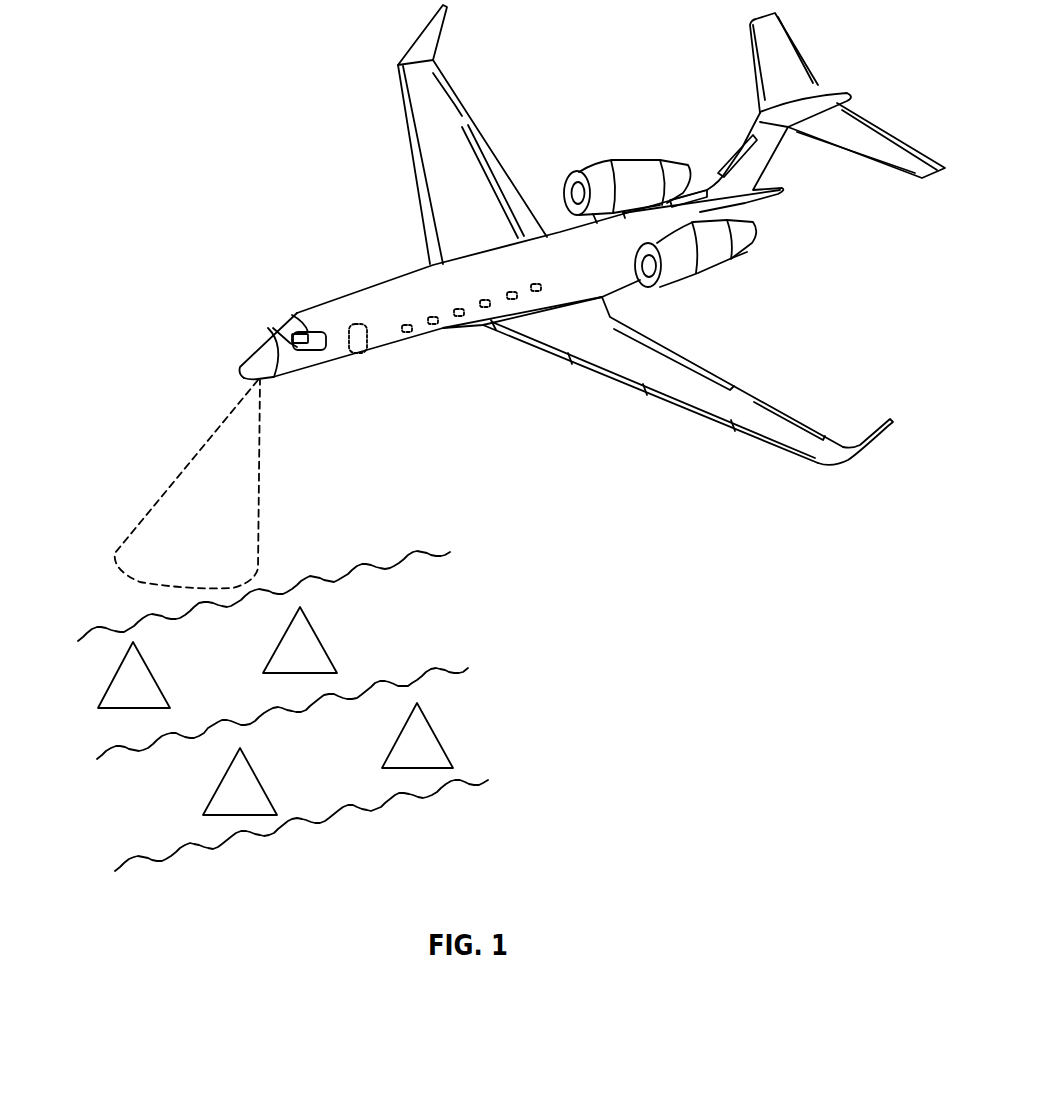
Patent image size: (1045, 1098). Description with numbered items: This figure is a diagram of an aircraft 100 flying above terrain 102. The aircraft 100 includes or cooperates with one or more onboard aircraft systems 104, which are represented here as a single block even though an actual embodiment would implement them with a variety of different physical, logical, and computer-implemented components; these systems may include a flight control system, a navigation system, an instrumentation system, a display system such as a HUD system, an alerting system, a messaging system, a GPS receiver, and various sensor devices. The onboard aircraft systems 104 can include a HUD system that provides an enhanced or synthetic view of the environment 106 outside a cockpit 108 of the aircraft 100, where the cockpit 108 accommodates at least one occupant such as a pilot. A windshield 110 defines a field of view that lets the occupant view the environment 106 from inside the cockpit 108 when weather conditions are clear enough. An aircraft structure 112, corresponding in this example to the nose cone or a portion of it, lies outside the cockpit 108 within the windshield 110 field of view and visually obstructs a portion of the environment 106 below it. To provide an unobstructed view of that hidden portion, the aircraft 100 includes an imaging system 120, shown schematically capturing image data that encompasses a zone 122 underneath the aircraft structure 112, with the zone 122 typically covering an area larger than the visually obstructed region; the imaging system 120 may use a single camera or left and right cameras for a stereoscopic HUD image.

The aircraft 100 is at (552, 235).
The terrain 102 is at (532, 640).
The onboard aircraft systems 104 is at (298, 333).
The environment 106 is at (115, 480).
The cockpit 108 is at (283, 320).
The windshield 110 is at (309, 334).
The aircraft structure 112 is at (234, 351).
The imaging system 120 is at (261, 379).
The zone 122 is at (218, 553).